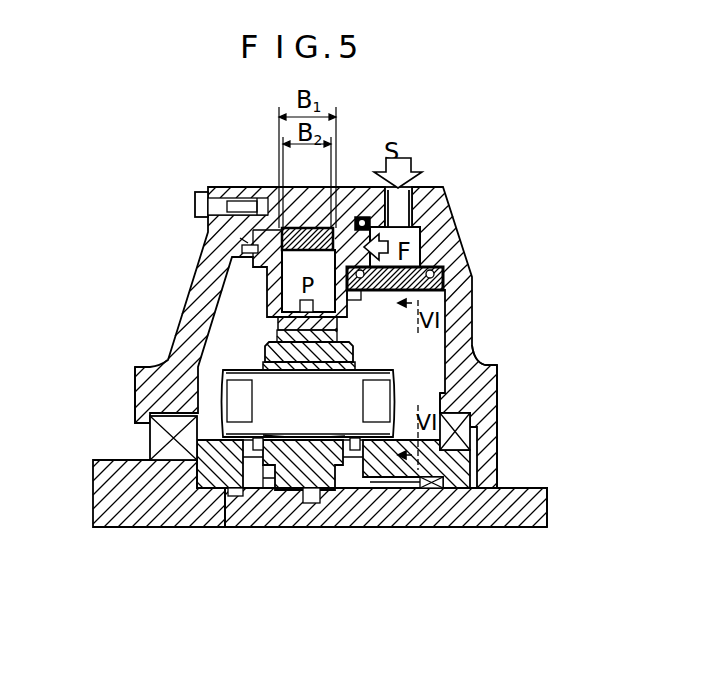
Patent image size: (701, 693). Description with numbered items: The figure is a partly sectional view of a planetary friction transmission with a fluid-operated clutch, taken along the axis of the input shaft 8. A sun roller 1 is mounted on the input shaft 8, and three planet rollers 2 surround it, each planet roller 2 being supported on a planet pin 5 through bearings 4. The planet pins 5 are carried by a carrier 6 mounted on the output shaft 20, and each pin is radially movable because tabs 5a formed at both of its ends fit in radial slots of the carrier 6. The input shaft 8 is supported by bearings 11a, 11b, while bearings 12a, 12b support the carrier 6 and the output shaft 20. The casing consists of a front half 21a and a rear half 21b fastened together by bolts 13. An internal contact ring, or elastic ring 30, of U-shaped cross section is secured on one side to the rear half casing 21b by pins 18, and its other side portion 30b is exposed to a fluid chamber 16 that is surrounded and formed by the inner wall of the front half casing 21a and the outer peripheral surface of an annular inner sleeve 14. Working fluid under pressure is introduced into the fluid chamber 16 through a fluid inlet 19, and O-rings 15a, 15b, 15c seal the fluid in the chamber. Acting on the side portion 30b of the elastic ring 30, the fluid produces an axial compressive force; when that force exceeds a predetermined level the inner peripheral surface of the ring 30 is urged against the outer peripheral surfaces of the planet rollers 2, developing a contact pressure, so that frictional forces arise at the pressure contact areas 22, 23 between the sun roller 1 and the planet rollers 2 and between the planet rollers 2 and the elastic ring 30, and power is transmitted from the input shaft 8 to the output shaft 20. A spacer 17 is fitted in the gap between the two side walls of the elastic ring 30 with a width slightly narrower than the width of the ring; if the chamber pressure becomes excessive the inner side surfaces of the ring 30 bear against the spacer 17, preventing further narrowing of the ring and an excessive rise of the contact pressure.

The sun roller 1 is at (335, 490).
The planet roller 2 is at (303, 503).
The bearing 4 is at (262, 360).
The planet pin 5 is at (172, 392).
The tab 5a is at (460, 372).
The carrier 6 is at (233, 447).
The input shaft 8 is at (500, 510).
The bearing 11a is at (442, 490).
The bearing 11b is at (240, 493).
The bearing 12a is at (475, 440).
The bearing 12b is at (160, 438).
The bolt 13 is at (197, 200).
The annular inner sleeve 14 is at (472, 298).
The O-ring 15a is at (364, 218).
The O-ring 15b is at (365, 292).
The O-ring 15c is at (445, 272).
The fluid chamber 16 is at (425, 245).
The spacer 17 is at (310, 227).
The pin 18 is at (250, 253).
The fluid inlet 19 is at (403, 203).
The output shaft 20 is at (120, 487).
The front half of the casing 21a is at (472, 348).
The rear half of the casing 21b is at (218, 190).
The pressure contact area 22 is at (266, 490).
The pressure contact area 23 is at (270, 323).
The elastic ring 30 is at (243, 241).
The side portion of the elastic ring 30b is at (418, 200).